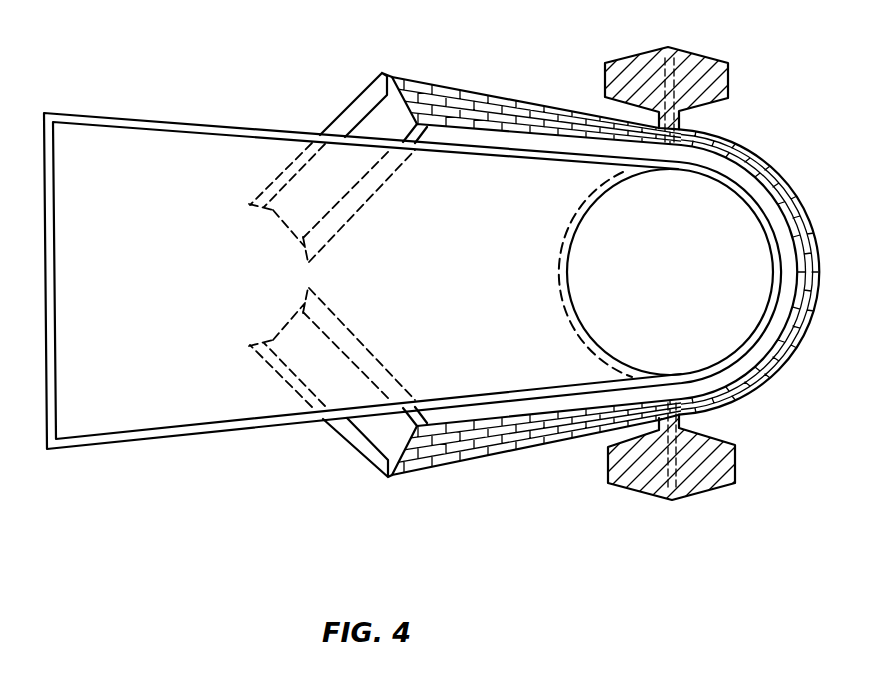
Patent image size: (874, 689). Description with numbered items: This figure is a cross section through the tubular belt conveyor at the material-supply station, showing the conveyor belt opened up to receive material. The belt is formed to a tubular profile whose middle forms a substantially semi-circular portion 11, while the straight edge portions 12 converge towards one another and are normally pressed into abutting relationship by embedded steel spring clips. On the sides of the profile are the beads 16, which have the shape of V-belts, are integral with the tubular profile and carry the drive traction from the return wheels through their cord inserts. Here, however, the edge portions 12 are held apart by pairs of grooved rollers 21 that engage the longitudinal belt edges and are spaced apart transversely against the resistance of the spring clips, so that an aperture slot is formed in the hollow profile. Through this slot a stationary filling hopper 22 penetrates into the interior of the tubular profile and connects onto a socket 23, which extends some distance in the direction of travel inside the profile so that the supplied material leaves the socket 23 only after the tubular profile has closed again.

The semi-circular portion 11 is at (818, 283).
The edge portions 12 is at (487, 96).
The beads 16 is at (643, 60).
The grooved rollers 21 is at (383, 72).
The filling hopper 22 is at (193, 126).
The socket 23 is at (758, 212).